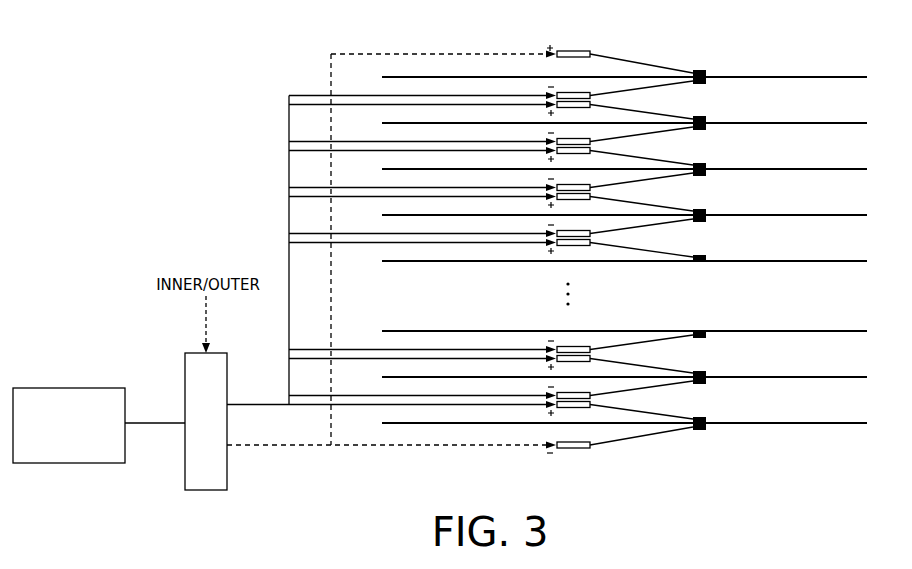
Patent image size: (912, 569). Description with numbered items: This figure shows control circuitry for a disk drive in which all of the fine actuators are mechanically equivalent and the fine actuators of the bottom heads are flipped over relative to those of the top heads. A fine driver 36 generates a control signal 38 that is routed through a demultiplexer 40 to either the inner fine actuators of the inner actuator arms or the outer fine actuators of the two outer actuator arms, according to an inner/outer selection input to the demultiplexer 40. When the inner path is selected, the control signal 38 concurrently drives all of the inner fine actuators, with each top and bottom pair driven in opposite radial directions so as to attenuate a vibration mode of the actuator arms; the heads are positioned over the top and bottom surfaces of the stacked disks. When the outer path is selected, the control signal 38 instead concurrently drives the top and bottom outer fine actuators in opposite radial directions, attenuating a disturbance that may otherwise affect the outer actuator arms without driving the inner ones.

The fine driver 36 is at (69, 388).
The control signal 38 is at (157, 420).
The demultiplexer 40 is at (207, 491).